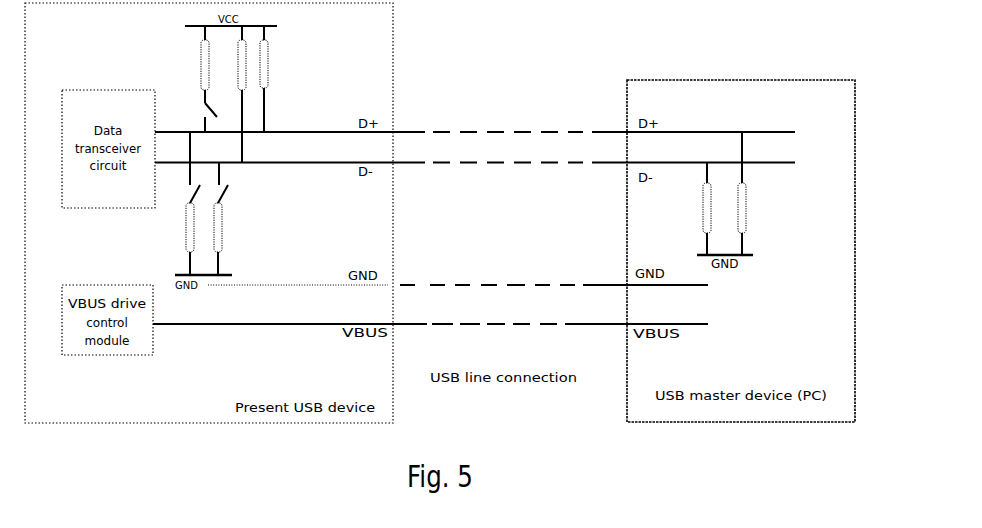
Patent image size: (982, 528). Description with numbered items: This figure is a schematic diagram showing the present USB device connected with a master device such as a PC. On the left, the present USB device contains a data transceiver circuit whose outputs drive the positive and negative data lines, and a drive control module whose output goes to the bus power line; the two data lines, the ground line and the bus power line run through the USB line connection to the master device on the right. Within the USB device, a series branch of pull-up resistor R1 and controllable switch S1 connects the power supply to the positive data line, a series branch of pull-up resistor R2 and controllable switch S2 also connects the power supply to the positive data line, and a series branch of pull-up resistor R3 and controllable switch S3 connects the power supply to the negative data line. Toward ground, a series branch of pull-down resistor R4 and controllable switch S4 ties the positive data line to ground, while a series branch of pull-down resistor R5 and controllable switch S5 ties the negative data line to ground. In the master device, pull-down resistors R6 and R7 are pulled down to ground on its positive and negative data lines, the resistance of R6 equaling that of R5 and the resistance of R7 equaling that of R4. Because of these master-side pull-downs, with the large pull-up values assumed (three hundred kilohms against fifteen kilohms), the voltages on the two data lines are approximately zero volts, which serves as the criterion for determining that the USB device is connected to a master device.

The pull-up resistor R1 is at (195, 64).
The pull-up resistor R2 is at (273, 69).
The pull-up resistor R3 is at (234, 79).
The pull-down resistor R4 is at (181, 239).
The pull-down resistor R5 is at (231, 239).
The pull-down resistor R6 is at (698, 209).
The pull-down resistor R7 is at (752, 193).
The controllable switch S1 is at (199, 113).
The controllable switch S2 is at (275, 113).
The controllable switch S3 is at (234, 128).
The controllable switch S4 is at (186, 170).
The controllable switch S5 is at (233, 186).